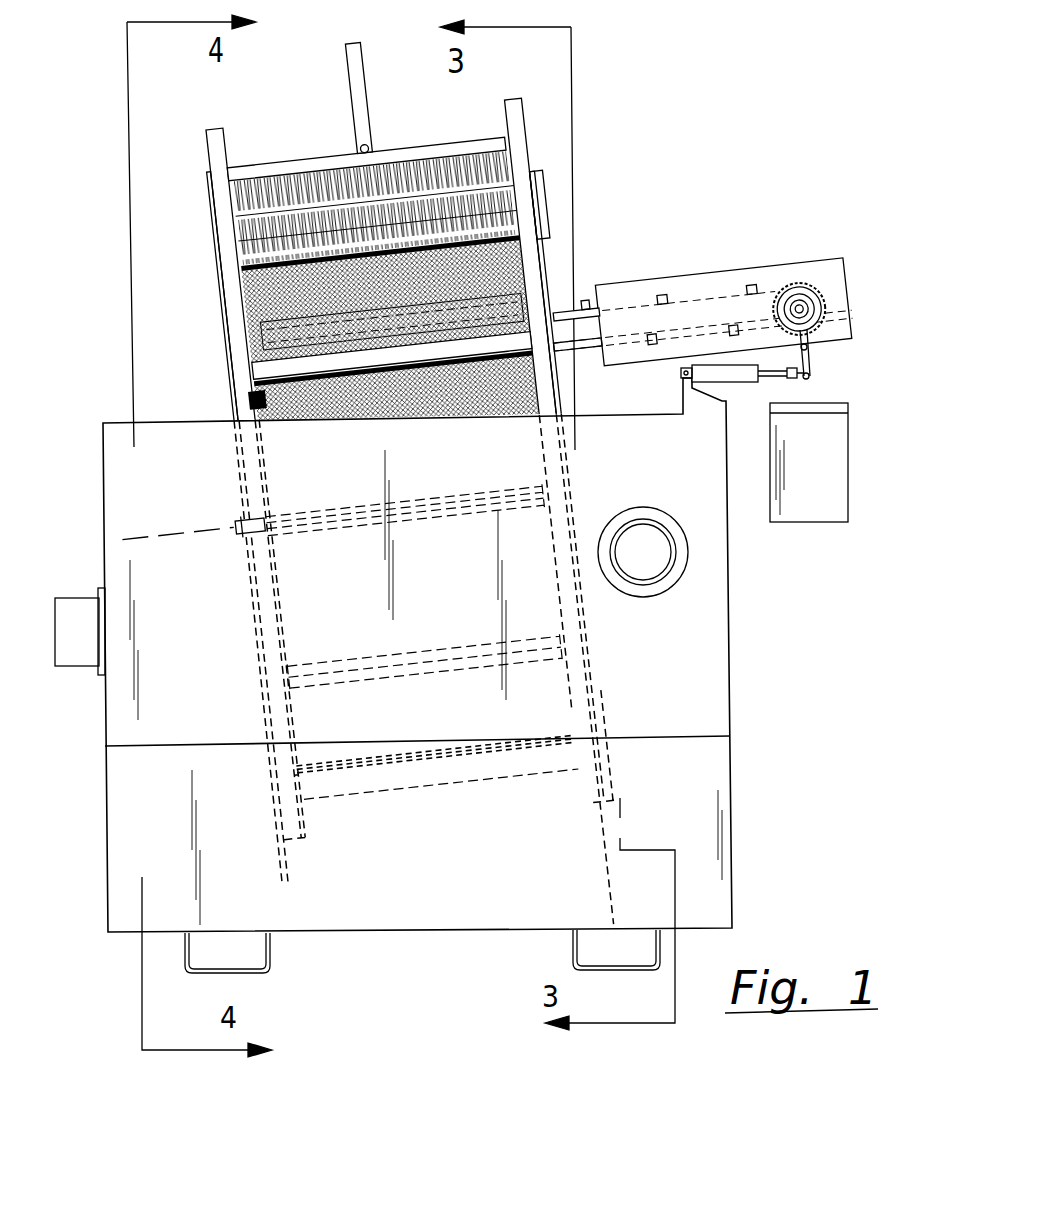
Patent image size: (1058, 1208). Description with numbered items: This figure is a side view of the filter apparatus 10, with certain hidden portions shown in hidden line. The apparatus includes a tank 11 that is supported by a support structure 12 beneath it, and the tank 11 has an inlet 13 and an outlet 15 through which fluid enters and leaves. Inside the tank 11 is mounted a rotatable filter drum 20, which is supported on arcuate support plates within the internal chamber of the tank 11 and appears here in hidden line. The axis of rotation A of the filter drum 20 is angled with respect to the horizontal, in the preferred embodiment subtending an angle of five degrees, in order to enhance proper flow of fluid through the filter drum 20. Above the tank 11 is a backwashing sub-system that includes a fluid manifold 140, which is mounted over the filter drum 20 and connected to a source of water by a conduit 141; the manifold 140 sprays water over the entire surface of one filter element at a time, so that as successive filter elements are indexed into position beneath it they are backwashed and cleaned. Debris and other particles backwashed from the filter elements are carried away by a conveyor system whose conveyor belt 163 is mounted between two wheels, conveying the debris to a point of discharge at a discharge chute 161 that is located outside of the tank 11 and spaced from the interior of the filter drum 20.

The filter apparatus 10 is at (782, 819).
The tank 11 is at (98, 722).
The support structure 12 is at (270, 960).
The inlet 13 is at (679, 575).
The outlet 15 is at (77, 600).
The filter drum 20 is at (200, 191).
The fluid manifold 140 is at (318, 150).
The conduit 141 is at (347, 78).
The discharge chute 161 is at (822, 522).
The conveyor belt 163 is at (580, 300).
The axis of rotation A is at (236, 527).